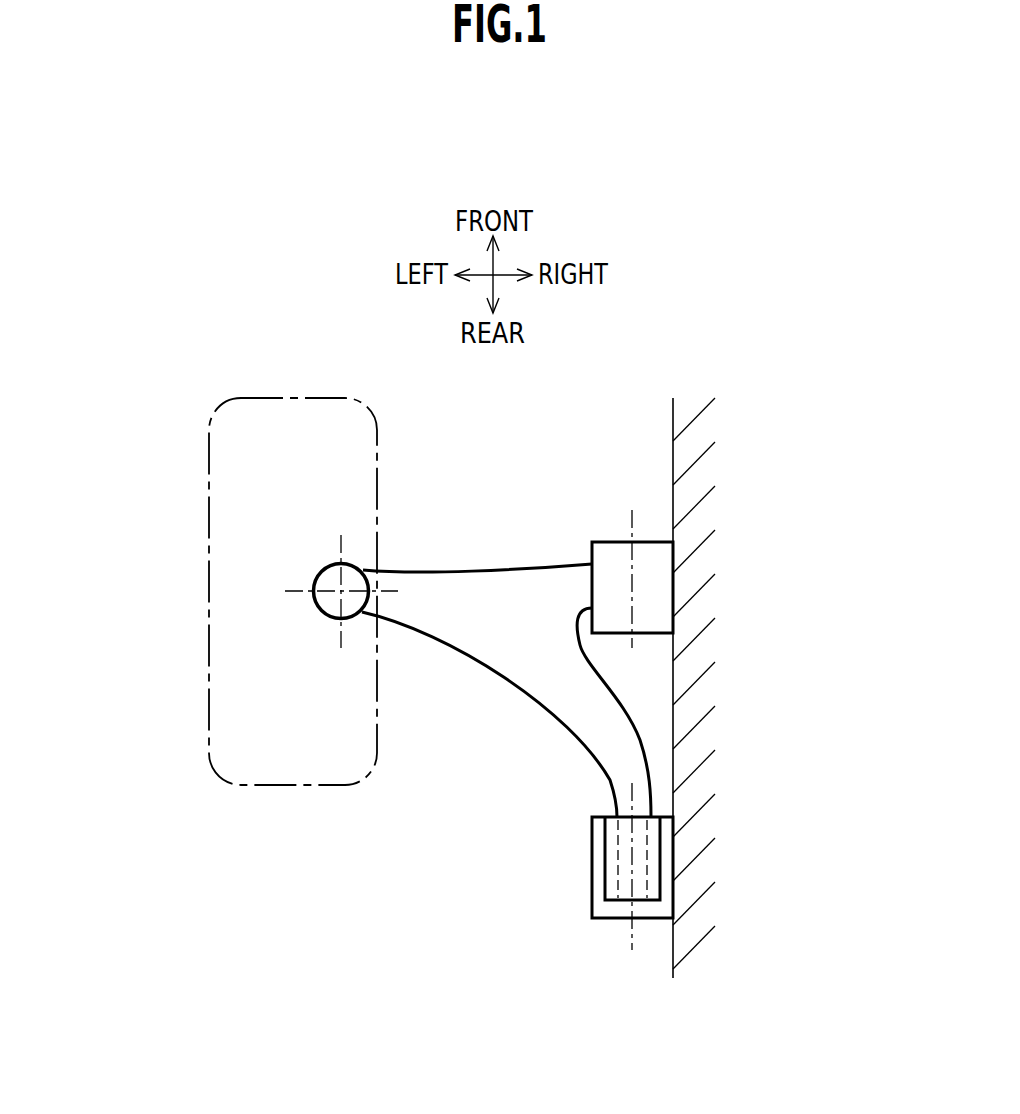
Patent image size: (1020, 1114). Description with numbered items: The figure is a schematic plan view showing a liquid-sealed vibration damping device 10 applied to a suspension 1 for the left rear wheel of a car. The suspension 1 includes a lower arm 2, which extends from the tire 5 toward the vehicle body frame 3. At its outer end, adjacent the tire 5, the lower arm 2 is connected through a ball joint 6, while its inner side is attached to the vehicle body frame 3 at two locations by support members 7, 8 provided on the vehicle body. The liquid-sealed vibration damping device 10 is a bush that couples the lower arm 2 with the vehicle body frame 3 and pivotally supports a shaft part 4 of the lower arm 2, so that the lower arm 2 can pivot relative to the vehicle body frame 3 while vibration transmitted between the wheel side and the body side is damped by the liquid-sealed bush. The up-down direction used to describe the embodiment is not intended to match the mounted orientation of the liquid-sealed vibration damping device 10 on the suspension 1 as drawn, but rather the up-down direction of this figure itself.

The suspension 1 is at (513, 712).
The lower arm 2 is at (488, 556).
The vehicle body frame 3 is at (673, 425).
The shaft part 4 is at (618, 852).
The tire 5 is at (209, 517).
The ball joint 6 is at (348, 565).
The support member 7 is at (612, 542).
The support member 8 is at (592, 837).
The liquid-sealed vibration damping device 10 is at (605, 885).